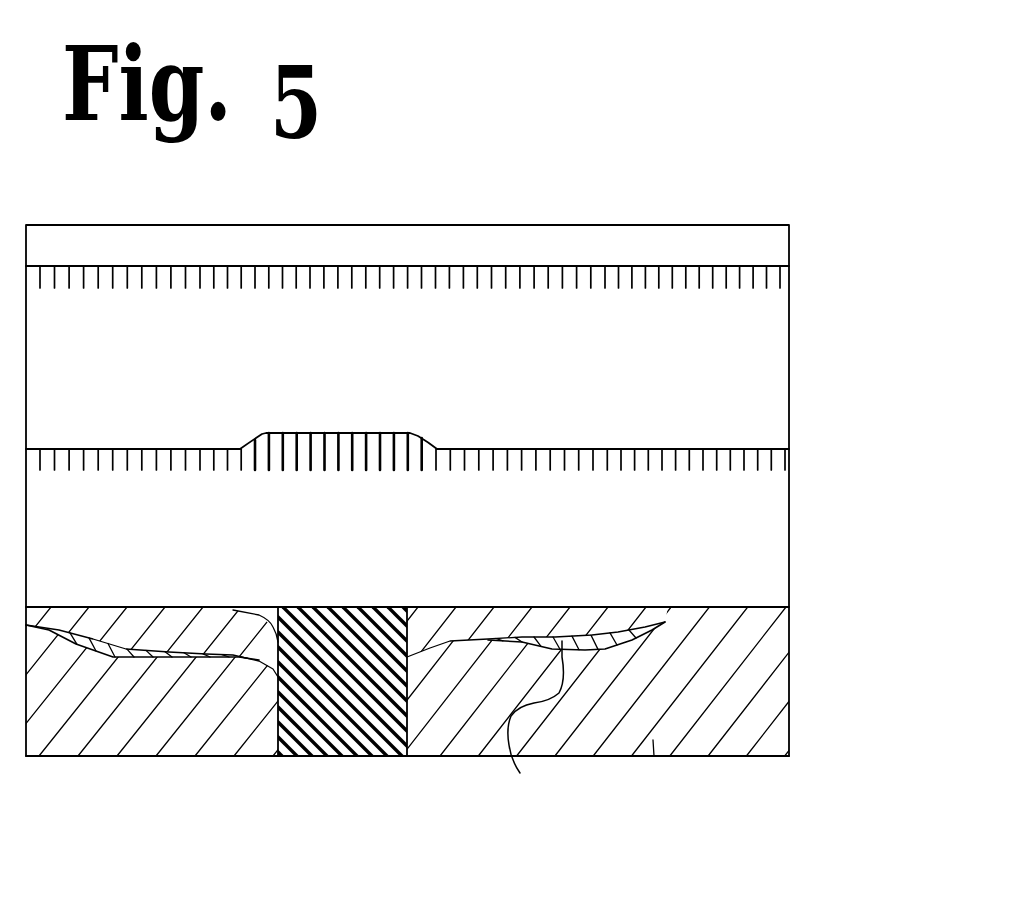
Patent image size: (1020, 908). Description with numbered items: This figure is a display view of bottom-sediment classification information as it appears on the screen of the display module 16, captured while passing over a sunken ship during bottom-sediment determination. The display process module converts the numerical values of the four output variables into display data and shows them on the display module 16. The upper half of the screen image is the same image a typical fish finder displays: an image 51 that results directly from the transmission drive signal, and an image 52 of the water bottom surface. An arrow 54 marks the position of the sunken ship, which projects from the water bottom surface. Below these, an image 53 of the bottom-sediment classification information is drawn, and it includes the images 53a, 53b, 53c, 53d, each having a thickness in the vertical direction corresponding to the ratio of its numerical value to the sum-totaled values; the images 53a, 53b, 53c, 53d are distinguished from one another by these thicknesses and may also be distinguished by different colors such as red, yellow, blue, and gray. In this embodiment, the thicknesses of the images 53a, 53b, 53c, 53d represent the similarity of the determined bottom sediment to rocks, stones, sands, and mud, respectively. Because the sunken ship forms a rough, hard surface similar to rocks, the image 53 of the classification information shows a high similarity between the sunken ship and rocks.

The display module 16 is at (790, 350).
The image directly resulted from a transmission drive signal 51 is at (762, 263).
The image of the water bottom surface 52 is at (762, 446).
The image of the bottom-sediment classification information 53 is at (450, 694).
The image 53a is at (348, 607).
The image 53b is at (522, 607).
The image 53c is at (525, 747).
The image 53d is at (653, 745).
The arrow 54 is at (301, 471).